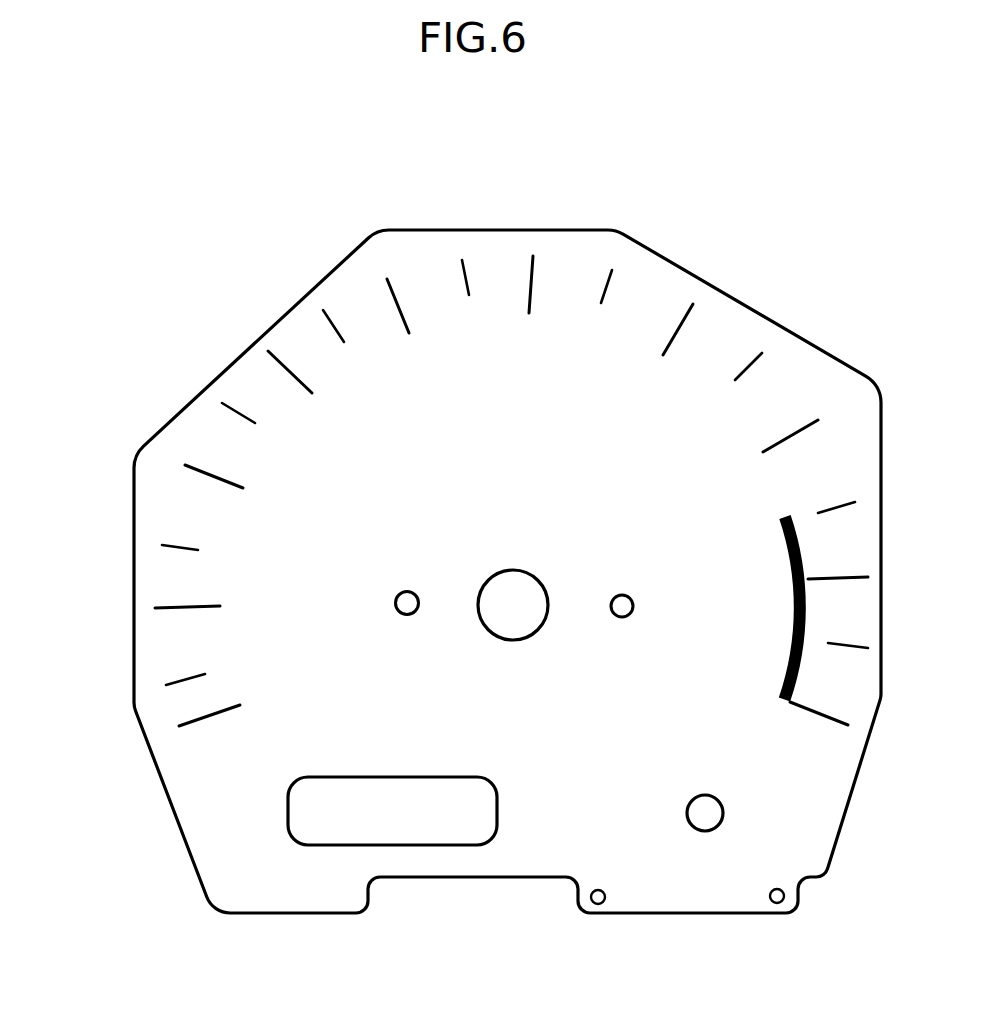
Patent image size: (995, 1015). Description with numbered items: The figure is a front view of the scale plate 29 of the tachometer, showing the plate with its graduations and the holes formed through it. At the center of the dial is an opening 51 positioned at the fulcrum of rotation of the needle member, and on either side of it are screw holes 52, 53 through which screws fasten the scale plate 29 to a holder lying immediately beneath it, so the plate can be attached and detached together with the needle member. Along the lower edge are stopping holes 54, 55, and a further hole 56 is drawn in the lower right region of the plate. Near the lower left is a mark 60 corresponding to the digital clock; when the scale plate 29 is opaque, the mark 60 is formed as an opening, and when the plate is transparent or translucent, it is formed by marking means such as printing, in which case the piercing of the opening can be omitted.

The scale plate 29 is at (131, 575).
The opening 51 is at (500, 636).
The screw hole 52 is at (396, 610).
The screw hole 53 is at (622, 617).
The stopping hole 54 is at (593, 910).
The stopping hole 55 is at (772, 903).
The lamp hole 56 is at (687, 813).
The mark 60 is at (308, 845).